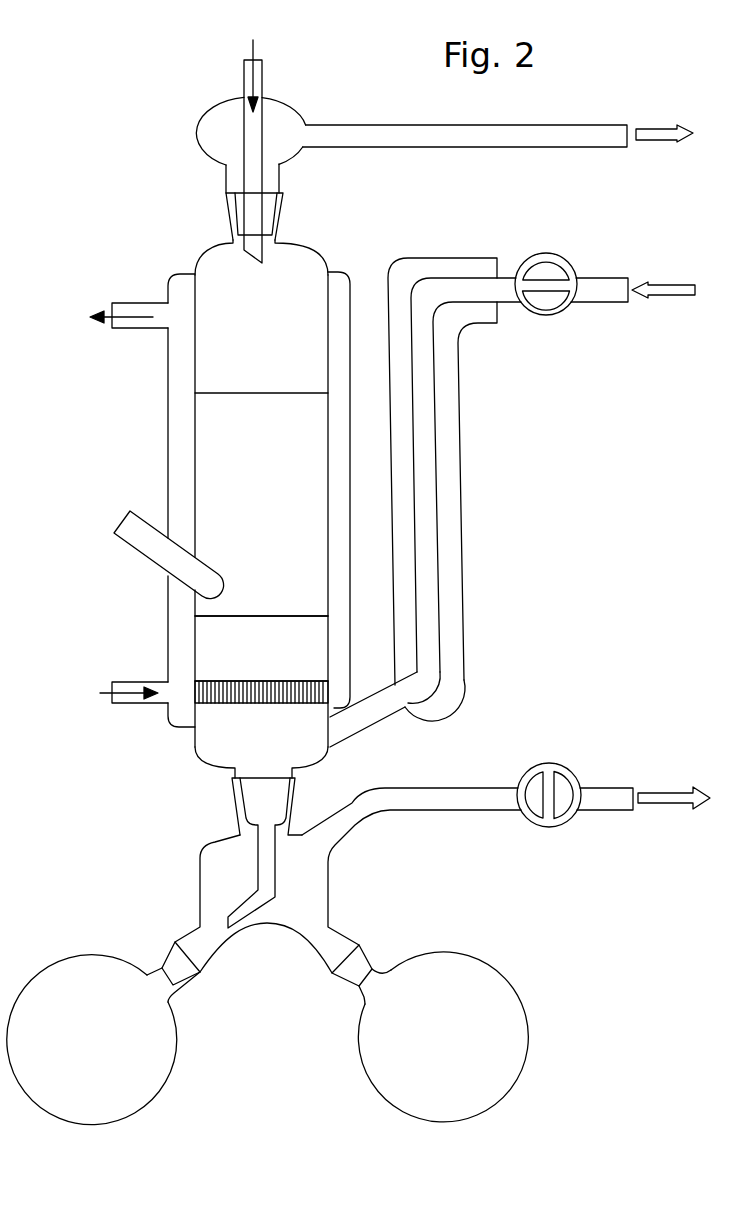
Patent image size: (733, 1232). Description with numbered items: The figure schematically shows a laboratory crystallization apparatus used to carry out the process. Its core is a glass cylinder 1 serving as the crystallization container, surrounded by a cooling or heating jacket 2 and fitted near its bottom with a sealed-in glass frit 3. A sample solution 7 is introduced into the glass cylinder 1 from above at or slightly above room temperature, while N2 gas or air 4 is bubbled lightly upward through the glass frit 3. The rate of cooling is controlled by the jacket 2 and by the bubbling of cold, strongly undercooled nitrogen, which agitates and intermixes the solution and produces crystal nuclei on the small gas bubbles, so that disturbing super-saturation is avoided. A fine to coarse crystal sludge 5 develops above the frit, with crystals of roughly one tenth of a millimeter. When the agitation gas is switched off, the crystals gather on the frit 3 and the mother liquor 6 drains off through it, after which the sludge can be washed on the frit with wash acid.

The glass cylinder 1 is at (194, 258).
The cooling or heating jacket 2 is at (178, 297).
The sealed-in glass frit 3 is at (230, 705).
The N2 gas or air 4 is at (678, 288).
The crystal sludge 5 is at (268, 664).
The mother liquor 6 is at (268, 534).
The sample solution 7 is at (258, 35).